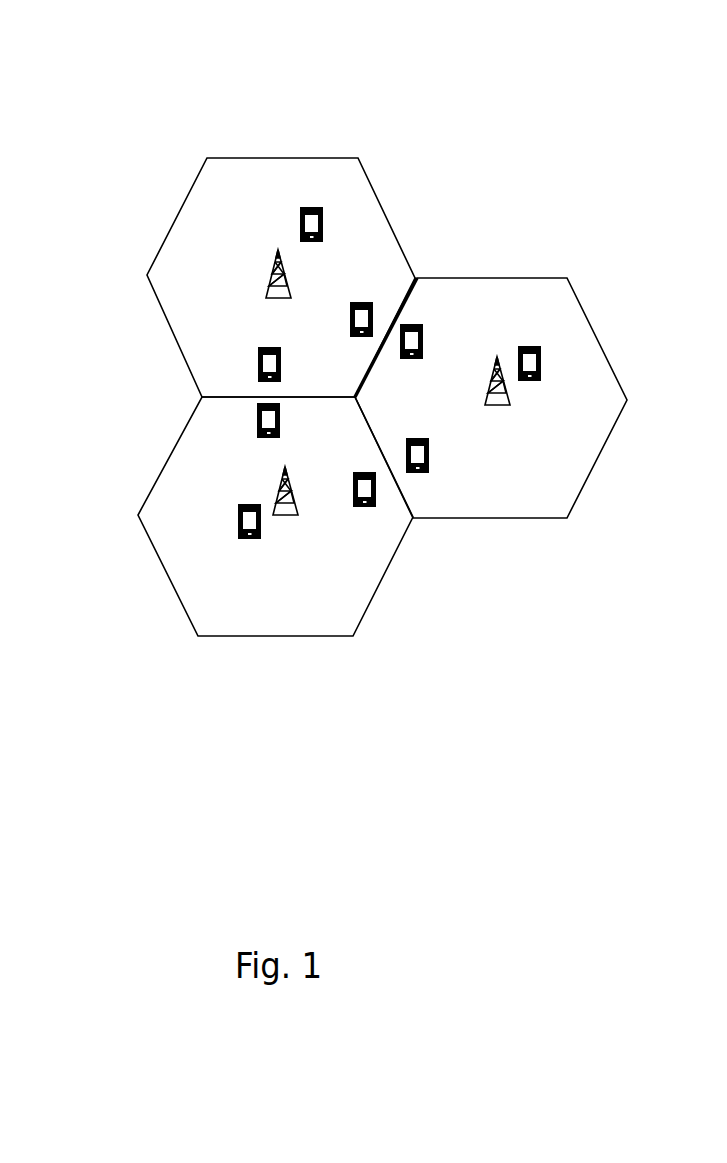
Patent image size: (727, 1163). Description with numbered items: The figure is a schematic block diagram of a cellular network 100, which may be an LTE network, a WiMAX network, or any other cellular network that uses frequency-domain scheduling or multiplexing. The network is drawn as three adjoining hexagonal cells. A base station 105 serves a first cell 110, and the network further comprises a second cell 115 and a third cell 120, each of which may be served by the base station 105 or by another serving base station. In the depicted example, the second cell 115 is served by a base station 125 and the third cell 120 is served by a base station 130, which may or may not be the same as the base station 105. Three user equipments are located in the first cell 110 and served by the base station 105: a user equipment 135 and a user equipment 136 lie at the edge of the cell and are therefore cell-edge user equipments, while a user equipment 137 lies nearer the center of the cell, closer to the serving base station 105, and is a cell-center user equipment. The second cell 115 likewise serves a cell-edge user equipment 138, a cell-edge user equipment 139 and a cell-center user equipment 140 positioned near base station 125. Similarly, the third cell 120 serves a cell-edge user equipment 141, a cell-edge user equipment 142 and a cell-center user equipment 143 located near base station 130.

The cellular network 100 is at (162, 103).
The base station 105 is at (287, 467).
The first cell 110 is at (237, 637).
The second cell 115 is at (558, 278).
The third cell 120 is at (255, 158).
The base station 125 is at (497, 357).
The base station 130 is at (278, 250).
The user equipment 135 is at (377, 492).
The user equipment 136 is at (257, 410).
The user equipment 137 is at (238, 513).
The cell-edge user equipment 138 is at (430, 465).
The cell-edge user equipment 139 is at (418, 324).
The cell-center user equipment 140 is at (541, 372).
The cell-edge user equipment 141 is at (258, 355).
The cell-edge user equipment 142 is at (360, 302).
The cell-center user equipment 143 is at (318, 207).